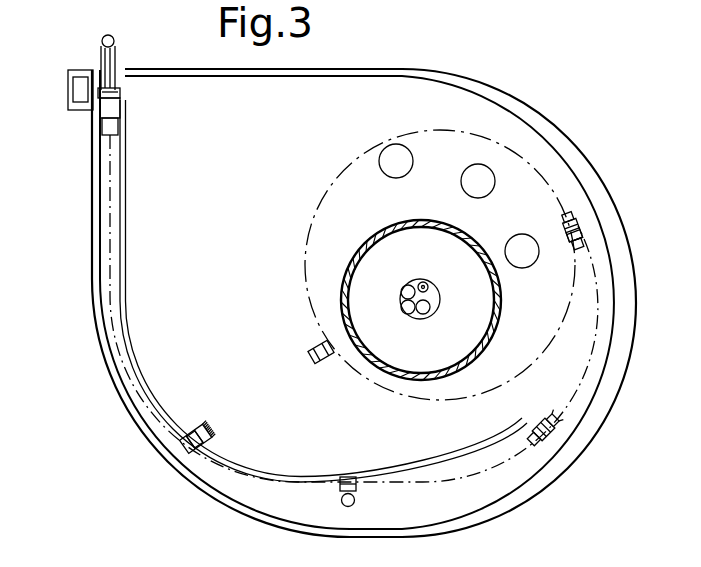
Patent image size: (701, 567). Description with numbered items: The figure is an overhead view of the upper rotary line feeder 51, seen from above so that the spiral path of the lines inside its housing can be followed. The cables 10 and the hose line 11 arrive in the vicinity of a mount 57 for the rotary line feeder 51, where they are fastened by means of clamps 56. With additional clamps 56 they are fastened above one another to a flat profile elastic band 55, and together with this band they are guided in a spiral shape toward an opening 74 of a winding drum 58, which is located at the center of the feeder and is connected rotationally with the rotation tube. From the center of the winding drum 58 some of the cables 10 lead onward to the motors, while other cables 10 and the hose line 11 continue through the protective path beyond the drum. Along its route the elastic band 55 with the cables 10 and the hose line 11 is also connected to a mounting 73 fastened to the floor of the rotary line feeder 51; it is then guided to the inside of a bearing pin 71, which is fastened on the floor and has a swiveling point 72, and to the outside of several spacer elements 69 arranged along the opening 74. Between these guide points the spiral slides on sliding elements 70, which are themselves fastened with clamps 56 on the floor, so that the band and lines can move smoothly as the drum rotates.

The cables 10 is at (349, 242).
The hose line 11 is at (113, 42).
The rotary line feeder 51 is at (556, 123).
The flat profile elastic band 55 is at (118, 136).
The clamps 56 is at (113, 90).
The mount 57 is at (70, 90).
The winding drum 58 is at (498, 307).
The spacer elements 69 is at (525, 257).
The sliding elements 70 is at (572, 215).
The bearing pin 71 is at (440, 518).
The swiveling point 72 is at (357, 500).
The mounting 73 is at (205, 447).
The opening 74 is at (430, 299).